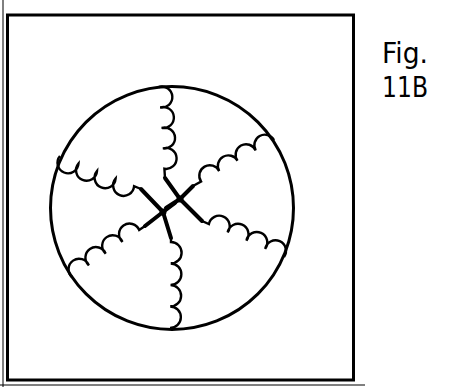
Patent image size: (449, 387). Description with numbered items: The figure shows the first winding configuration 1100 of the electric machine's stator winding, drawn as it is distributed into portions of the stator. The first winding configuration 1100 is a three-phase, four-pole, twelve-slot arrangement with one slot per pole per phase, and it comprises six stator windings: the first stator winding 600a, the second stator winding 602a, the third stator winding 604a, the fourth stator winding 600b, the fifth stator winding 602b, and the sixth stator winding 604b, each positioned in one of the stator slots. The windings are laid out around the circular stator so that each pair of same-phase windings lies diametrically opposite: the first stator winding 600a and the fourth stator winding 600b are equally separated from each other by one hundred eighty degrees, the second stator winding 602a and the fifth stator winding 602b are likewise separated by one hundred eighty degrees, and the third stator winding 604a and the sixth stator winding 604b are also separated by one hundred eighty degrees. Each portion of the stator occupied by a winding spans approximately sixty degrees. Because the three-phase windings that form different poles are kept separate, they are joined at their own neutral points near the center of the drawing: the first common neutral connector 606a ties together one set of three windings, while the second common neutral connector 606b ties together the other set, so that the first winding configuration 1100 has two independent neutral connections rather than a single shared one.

The first winding configuration 1100 is at (331, 370).
The first stator winding 600a is at (160, 98).
The fourth stator winding 600b is at (185, 297).
The second stator winding 602a is at (242, 148).
The fifth stator winding 602b is at (84, 275).
The third stator winding 604a is at (275, 255).
The sixth stator winding 604b is at (82, 158).
The first common neutral connector 606a is at (181, 198).
The second common neutral connector 606b is at (162, 214).